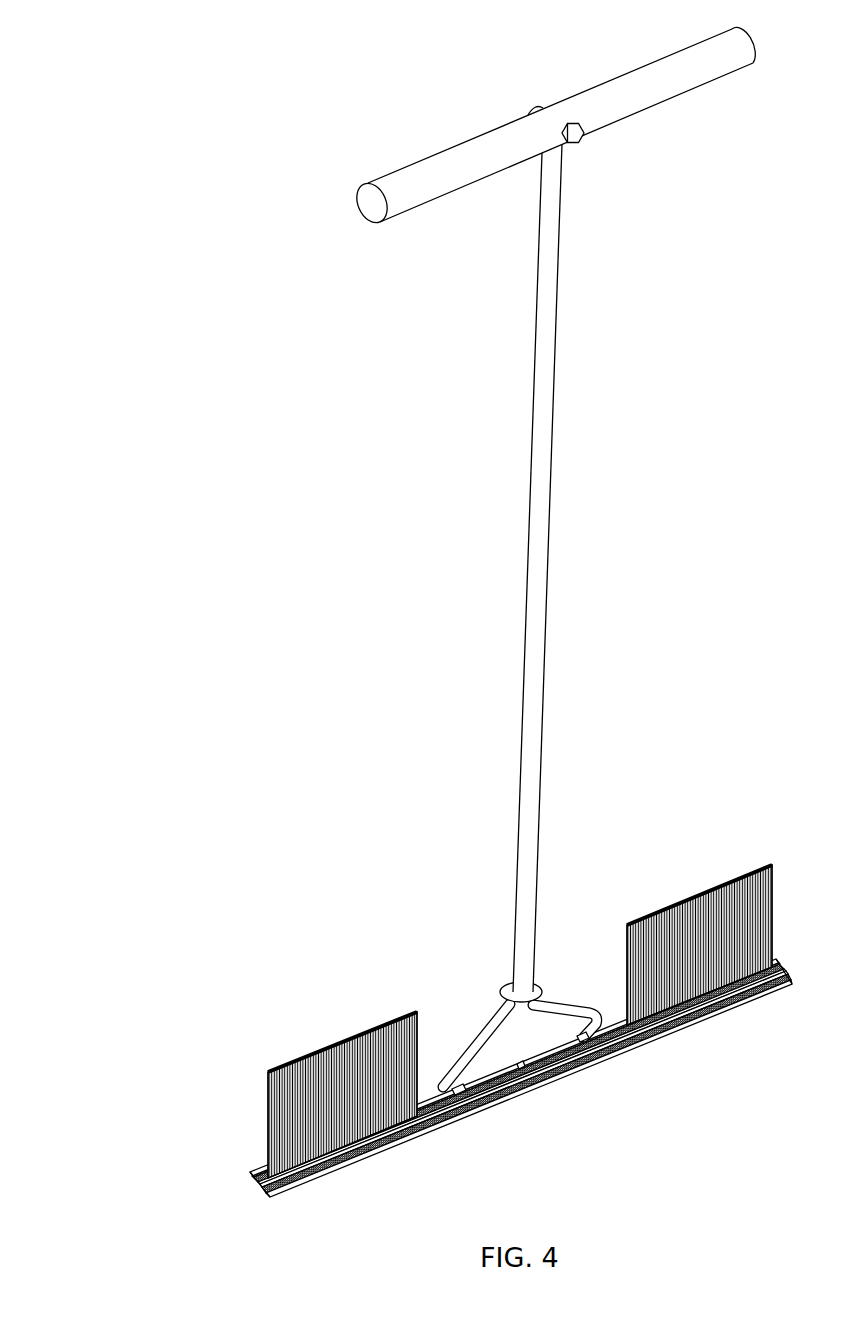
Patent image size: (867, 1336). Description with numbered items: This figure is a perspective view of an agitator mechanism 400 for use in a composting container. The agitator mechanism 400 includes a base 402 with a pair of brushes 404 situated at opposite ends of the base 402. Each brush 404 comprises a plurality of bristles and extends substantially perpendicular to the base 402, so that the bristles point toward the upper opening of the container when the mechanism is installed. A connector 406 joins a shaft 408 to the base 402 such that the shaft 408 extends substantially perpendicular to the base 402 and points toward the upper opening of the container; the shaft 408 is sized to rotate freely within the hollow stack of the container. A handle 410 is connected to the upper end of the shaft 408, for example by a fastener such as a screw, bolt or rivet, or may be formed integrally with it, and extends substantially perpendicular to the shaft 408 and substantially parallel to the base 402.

The agitator mechanism 400 is at (100, 61).
The base 402 is at (633, 1047).
The brushes 404 is at (323, 1053).
The connector 406 is at (487, 1005).
The shaft 408 is at (548, 593).
The handle 410 is at (425, 165).